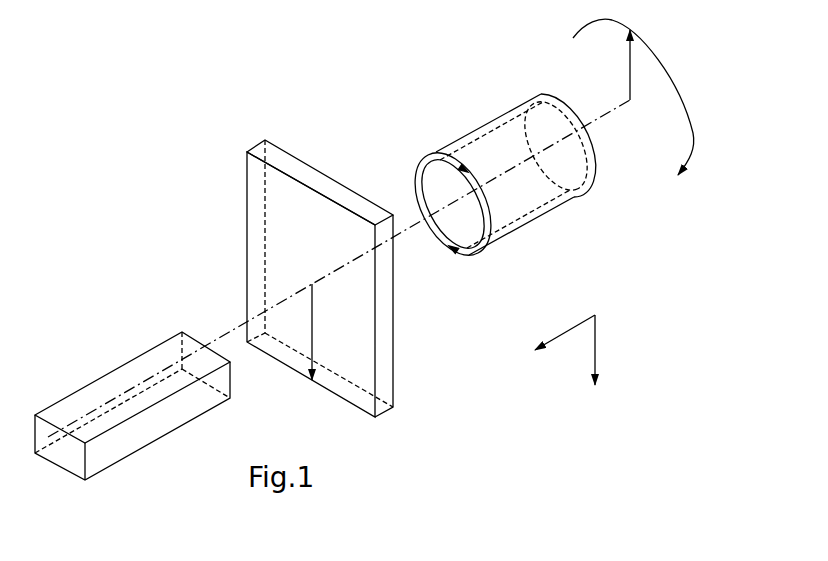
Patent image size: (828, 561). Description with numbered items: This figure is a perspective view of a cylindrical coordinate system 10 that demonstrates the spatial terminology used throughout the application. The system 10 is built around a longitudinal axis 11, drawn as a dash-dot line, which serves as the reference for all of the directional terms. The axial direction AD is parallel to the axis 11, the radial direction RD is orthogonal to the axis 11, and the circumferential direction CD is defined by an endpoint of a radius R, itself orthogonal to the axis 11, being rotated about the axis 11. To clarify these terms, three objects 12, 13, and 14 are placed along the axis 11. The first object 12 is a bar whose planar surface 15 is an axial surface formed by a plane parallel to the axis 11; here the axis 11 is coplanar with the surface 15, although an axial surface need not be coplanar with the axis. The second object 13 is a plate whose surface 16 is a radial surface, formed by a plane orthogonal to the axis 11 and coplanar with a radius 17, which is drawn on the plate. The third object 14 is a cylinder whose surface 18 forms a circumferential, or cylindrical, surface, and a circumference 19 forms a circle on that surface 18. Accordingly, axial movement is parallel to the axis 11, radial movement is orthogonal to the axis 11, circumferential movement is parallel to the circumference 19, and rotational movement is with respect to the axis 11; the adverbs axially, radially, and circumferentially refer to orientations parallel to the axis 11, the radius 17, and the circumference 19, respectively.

The cylindrical coordinate system 10 is at (210, 178).
The longitudinal axis 11 is at (585, 128).
The object 12 is at (105, 470).
The object 13 is at (402, 407).
The object 14 is at (520, 230).
The axial surface 15 is at (102, 392).
The radial surface 16 is at (258, 243).
The radius 17 is at (313, 328).
The circumferential surface 18 is at (478, 125).
The circumference 19 is at (415, 175).
The radius R is at (630, 62).
The circumferential direction CD is at (673, 68).
The axial direction AD is at (567, 330).
The radial direction RD is at (595, 345).